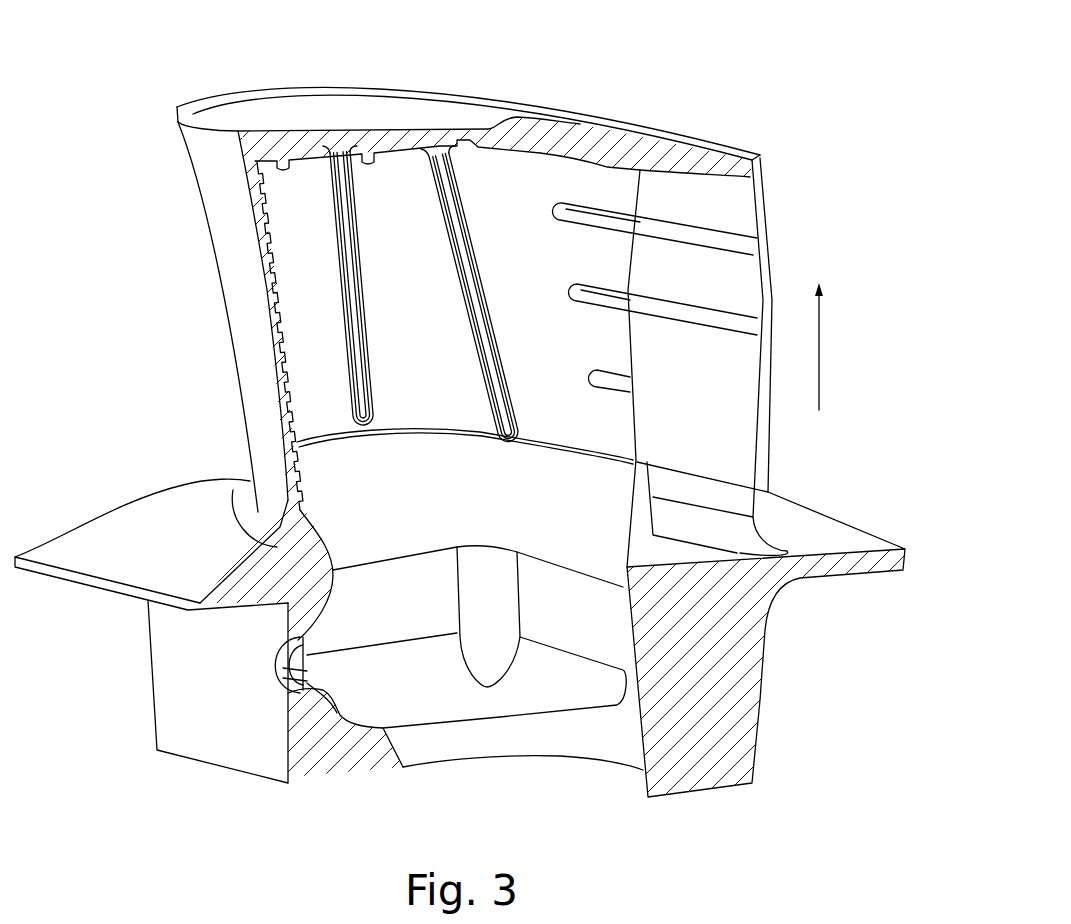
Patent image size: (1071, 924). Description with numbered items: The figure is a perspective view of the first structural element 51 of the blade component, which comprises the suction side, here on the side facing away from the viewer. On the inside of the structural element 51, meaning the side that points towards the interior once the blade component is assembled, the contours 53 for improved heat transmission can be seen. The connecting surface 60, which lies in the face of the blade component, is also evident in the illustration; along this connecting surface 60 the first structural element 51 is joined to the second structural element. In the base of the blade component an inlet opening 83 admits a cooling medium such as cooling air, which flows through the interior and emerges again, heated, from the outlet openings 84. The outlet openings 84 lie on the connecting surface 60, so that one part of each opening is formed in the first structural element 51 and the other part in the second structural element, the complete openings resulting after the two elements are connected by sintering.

The first structural element 51 is at (689, 95).
The contours 53 is at (712, 241).
The connecting surface 60 is at (253, 150).
The inlet opening 83 is at (278, 675).
The outlet openings 84 is at (280, 357).